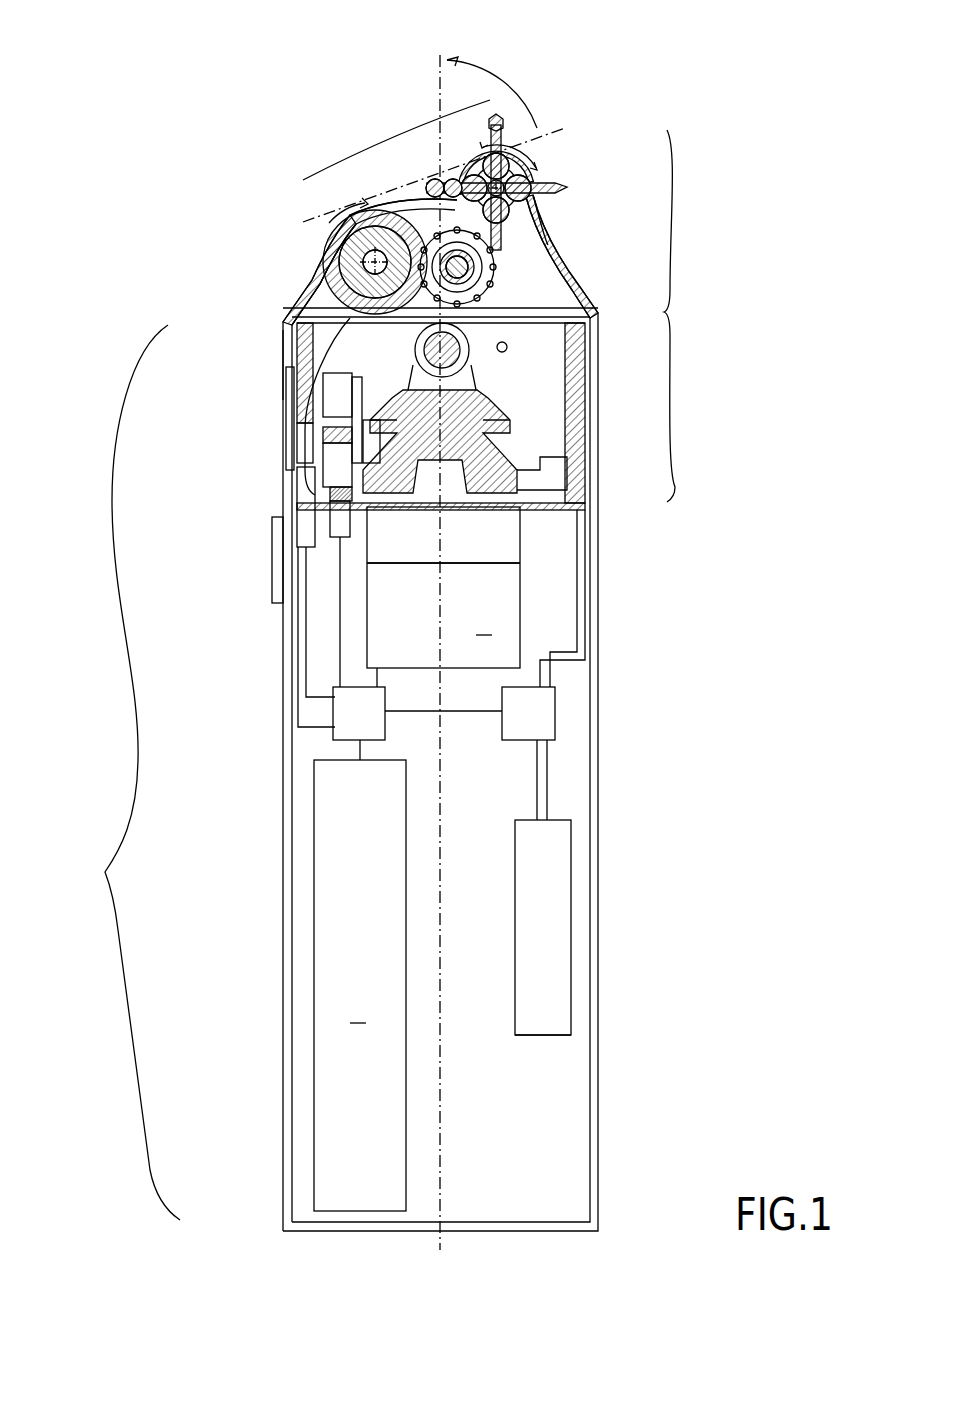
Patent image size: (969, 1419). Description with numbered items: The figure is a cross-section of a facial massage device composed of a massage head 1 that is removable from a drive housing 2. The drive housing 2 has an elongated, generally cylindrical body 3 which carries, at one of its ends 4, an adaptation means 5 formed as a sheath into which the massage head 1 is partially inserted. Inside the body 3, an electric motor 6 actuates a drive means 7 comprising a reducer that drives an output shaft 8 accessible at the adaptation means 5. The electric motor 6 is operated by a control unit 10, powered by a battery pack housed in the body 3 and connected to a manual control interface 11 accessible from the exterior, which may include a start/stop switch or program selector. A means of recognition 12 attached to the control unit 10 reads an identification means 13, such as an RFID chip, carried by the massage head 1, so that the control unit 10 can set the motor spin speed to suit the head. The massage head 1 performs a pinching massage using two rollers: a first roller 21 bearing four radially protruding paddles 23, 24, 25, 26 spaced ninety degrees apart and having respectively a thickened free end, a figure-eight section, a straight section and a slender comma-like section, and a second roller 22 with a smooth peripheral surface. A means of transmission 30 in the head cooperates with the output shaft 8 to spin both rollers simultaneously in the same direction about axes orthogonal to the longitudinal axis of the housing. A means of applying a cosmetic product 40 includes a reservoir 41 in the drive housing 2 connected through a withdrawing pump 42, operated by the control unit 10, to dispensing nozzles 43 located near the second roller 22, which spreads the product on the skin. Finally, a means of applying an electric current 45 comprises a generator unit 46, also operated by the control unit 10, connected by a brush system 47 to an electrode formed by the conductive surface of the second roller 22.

The massage head 1 is at (668, 312).
The drive housing 2 is at (103, 873).
The elongated body 3 is at (600, 750).
The end 4 is at (266, 333).
The adaptation means 5 is at (288, 392).
The electric motor 6 is at (443, 587).
The drive means 7 is at (427, 553).
The output shaft 8 is at (455, 507).
The control unit 10 is at (357, 713).
The manual control interface 11 is at (277, 565).
The means of recognition 12 is at (340, 520).
The identification means 13 is at (313, 497).
The first roller 21 is at (533, 148).
The second roller 22 is at (335, 250).
The paddle 23 is at (538, 120).
The paddle 24 is at (427, 181).
The paddle 25 is at (503, 240).
The paddle 26 is at (570, 183).
The means of transmission 30 is at (497, 363).
The means of applying a cosmetic product 40 is at (543, 1040).
The reservoir 41 is at (541, 913).
The withdrawing pump 42 is at (537, 713).
The dispensing nozzles 43 is at (297, 290).
The means of applying an electric current 45 is at (315, 562).
The generator unit 46 is at (303, 527).
The brush system 47 is at (287, 355).